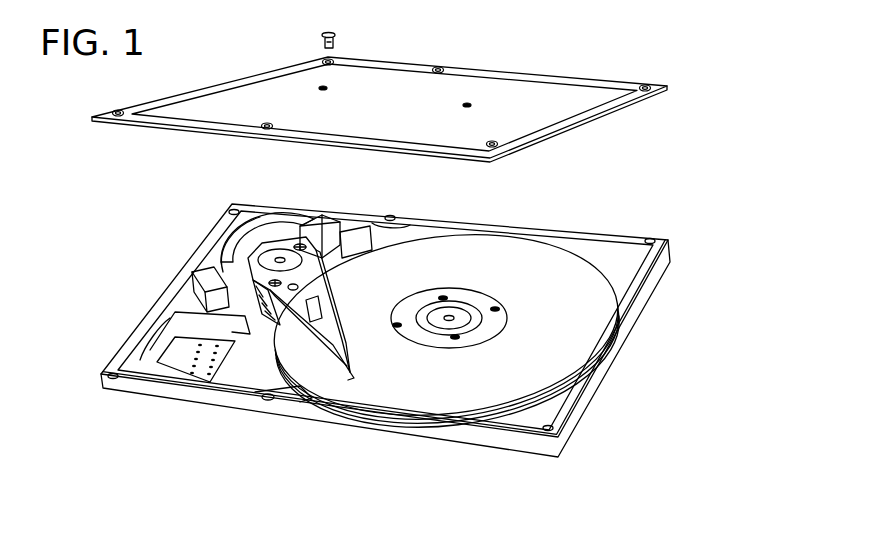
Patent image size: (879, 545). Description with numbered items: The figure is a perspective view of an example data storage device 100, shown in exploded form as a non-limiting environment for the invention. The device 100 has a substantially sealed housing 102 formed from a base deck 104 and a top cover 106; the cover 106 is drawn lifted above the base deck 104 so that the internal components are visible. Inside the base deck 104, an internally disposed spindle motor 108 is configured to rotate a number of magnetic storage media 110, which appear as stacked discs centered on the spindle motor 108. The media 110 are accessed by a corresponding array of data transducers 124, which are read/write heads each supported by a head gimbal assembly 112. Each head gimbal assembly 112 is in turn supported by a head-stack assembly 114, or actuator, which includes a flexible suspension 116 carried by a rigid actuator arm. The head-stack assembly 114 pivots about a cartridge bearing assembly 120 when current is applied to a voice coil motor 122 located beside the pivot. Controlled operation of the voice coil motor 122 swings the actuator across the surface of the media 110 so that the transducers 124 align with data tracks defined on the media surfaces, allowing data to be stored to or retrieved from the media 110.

The data storage device 100 is at (702, 45).
The housing 102 is at (379, 330).
The base deck 104 is at (613, 368).
The top cover 106 is at (567, 77).
The spindle motor 108 is at (458, 304).
The magnetic storage media 110 is at (500, 420).
The head gimbal assembly 112 is at (344, 318).
The head-stack assembly 114 is at (332, 304).
The flexible suspension 116 is at (334, 313).
The cartridge bearing assembly 120 is at (283, 258).
The voice coil motor 122 is at (277, 208).
The transducers 124 is at (352, 373).